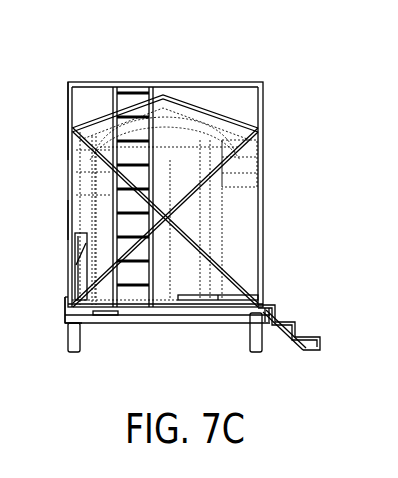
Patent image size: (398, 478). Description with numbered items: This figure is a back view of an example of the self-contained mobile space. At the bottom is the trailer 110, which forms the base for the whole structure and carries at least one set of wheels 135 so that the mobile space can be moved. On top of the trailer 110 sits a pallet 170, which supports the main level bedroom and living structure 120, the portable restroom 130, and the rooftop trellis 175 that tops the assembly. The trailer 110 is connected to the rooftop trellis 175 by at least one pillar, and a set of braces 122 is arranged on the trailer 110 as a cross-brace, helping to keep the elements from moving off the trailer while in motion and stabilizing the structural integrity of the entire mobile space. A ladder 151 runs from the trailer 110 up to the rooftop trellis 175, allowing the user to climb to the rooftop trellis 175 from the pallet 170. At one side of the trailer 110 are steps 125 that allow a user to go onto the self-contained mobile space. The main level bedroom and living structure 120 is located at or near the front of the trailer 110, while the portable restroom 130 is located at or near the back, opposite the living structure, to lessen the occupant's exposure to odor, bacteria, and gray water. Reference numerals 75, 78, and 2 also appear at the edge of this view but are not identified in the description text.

The trailer 110 is at (265, 307).
The main level bedroom and living structure 120 is at (80, 160).
The braces 122 is at (230, 147).
The steps 125 is at (293, 320).
The portable restroom 130 is at (160, 288).
The wheels 135 is at (65, 341).
The ladder 151 is at (113, 96).
The pallet 170 is at (90, 313).
The rooftop trellis 175 is at (190, 82).
The frame member 75 is at (35, 84).
The frame member 78 is at (34, 130).
The frame member 2 is at (34, 220).